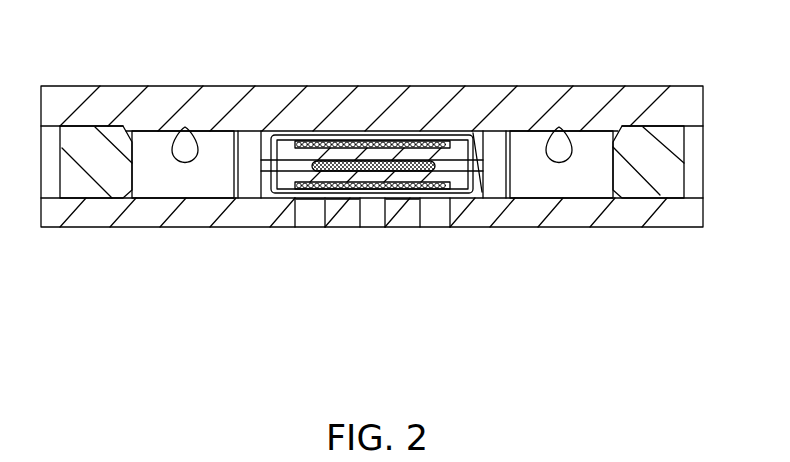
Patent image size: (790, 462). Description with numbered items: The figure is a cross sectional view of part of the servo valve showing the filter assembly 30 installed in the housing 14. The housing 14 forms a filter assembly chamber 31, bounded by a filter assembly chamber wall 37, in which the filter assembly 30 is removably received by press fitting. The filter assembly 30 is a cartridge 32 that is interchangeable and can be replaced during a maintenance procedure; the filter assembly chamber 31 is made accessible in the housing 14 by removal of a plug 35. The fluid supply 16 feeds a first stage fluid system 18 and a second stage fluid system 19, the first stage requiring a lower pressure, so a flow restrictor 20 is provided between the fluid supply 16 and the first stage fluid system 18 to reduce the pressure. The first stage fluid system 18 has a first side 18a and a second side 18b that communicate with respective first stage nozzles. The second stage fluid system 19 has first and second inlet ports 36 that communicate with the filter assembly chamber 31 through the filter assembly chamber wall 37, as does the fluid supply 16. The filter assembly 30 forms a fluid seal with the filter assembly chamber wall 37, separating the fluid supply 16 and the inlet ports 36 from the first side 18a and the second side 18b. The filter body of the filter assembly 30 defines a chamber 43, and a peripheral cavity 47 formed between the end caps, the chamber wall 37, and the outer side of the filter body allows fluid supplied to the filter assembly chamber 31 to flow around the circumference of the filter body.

The housing 14 is at (637, 95).
The fluid supply 16 is at (372, 217).
The first stage fluid system 18 is at (163, 187).
The first side 18a is at (160, 140).
The second side 18b is at (580, 187).
The second stage fluid system 19 is at (313, 217).
The flow restrictor 20 is at (263, 193).
The filter assembly 30 is at (365, 132).
The filter assembly chamber 31 is at (461, 120).
The cartridge 32 is at (342, 215).
The plug 35 is at (88, 186).
The inlet ports 36 is at (304, 218).
The filter assembly chamber wall 37 is at (403, 217).
The chamber 43 is at (415, 132).
The peripheral cavity 47 is at (342, 134).